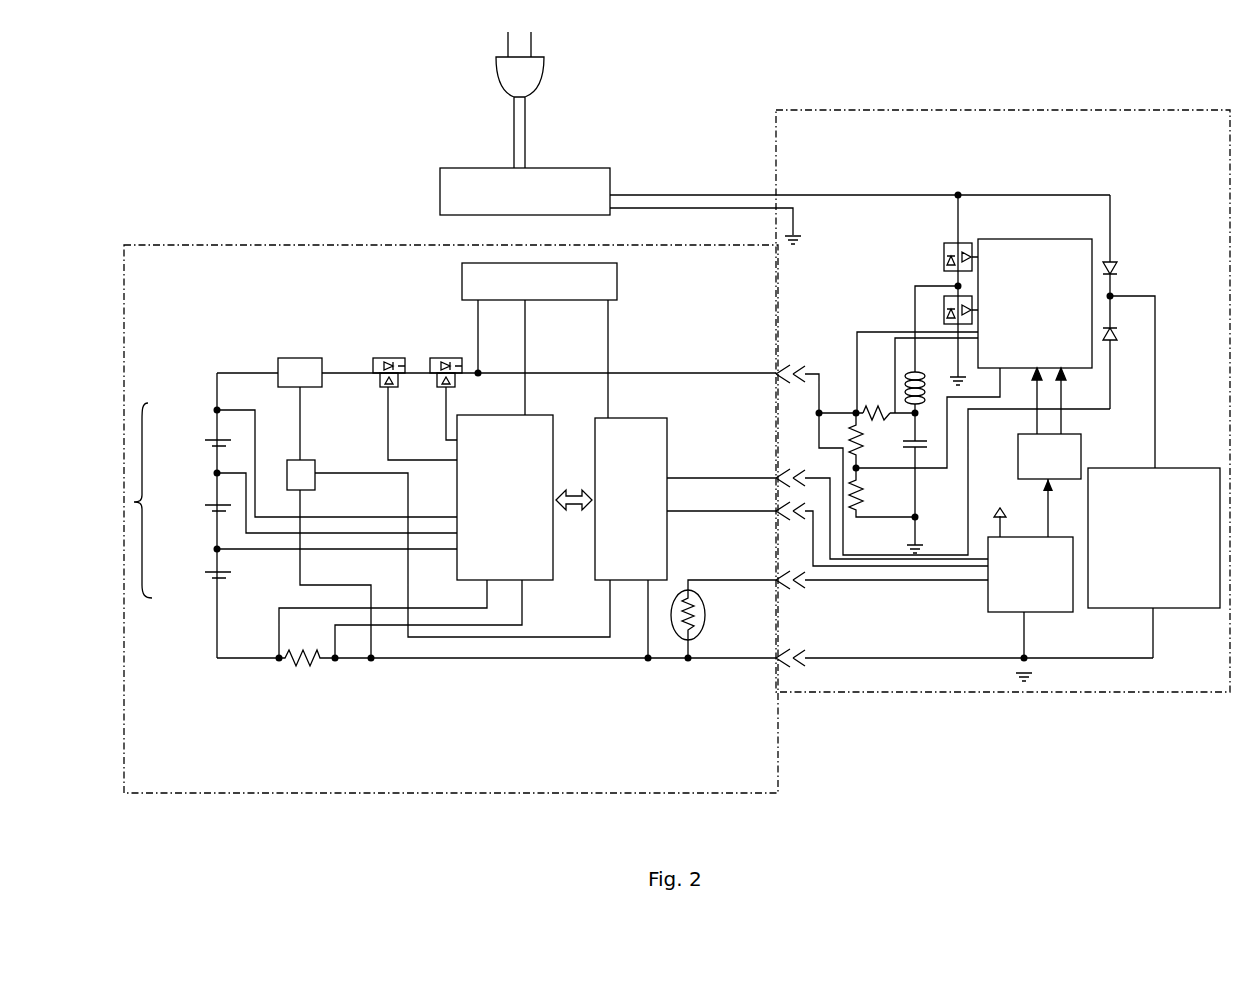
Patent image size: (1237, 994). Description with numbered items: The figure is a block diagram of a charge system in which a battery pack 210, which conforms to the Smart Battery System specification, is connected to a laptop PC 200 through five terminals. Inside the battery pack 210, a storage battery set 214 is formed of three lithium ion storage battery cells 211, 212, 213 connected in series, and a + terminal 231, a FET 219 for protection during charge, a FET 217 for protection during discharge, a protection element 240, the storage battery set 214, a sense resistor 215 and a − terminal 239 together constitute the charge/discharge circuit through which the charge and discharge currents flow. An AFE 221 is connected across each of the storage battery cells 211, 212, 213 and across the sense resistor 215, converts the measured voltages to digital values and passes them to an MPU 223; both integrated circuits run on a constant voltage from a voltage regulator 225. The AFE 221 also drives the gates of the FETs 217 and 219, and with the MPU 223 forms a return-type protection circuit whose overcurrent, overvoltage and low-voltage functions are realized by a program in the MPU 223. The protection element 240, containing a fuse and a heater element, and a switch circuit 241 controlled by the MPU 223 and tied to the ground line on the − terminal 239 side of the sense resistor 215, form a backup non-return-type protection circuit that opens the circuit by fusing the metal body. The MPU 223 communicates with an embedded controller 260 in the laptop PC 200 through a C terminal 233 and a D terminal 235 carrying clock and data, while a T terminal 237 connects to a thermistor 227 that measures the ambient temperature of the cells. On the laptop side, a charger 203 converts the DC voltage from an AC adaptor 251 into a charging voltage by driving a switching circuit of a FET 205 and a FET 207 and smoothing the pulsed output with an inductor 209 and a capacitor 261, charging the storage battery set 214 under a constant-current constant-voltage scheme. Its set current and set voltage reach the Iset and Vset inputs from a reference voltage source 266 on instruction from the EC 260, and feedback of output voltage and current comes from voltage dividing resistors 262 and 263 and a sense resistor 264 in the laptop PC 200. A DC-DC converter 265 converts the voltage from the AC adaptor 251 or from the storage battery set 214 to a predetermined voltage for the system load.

The laptop PC 200 is at (830, 141).
The charger 203 is at (1068, 238).
The FET 205 is at (944, 256).
The FET 207 is at (944, 310).
The inductor 209 is at (907, 372).
The battery pack 210 is at (170, 279).
The storage battery cell 211 is at (210, 571).
The storage battery cell 212 is at (210, 504).
The storage battery cell 213 is at (210, 440).
The storage battery set 214 is at (267, 500).
The sense resistor 215 is at (310, 662).
The FET for protection during discharge 217 is at (388, 357).
The FET for protection during charge 219 is at (446, 357).
The AFE 221 is at (553, 418).
The MPU 223 is at (667, 418).
The voltage regulator 225 is at (462, 276).
The thermistor 227 is at (705, 618).
The + terminal 231 is at (776, 362).
The C terminal 233 is at (790, 472).
The D terminal 235 is at (778, 532).
The T terminal 237 is at (800, 585).
The − terminal 239 is at (790, 665).
The protection element 240 is at (300, 358).
The switch circuit 241 is at (315, 465).
The AC adaptor 251 is at (440, 171).
The embedded controller 260 is at (988, 598).
The capacitor 261 is at (920, 450).
The voltage dividing resistor 262 is at (852, 440).
The voltage dividing resistor 263 is at (877, 512).
The current sense resistor 264 is at (860, 410).
The DC-DC converter 265 is at (1185, 612).
The reference voltage source 266 is at (1081, 458).